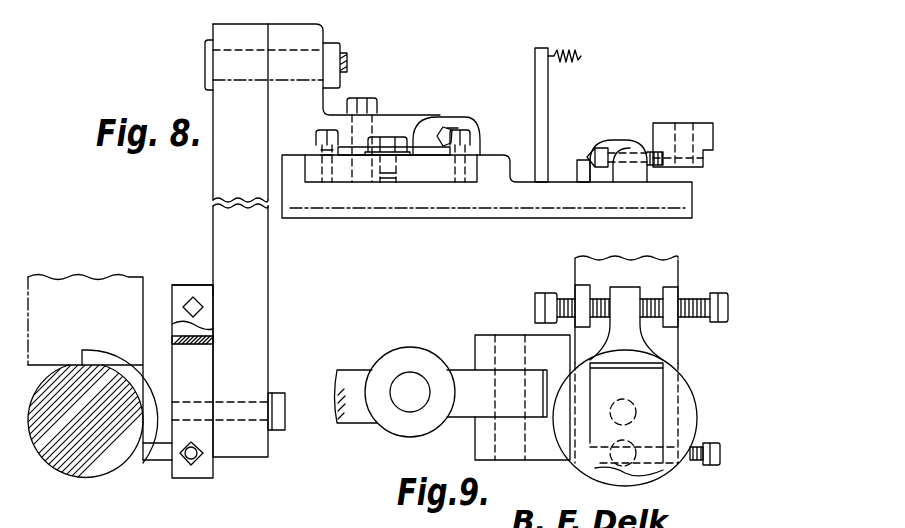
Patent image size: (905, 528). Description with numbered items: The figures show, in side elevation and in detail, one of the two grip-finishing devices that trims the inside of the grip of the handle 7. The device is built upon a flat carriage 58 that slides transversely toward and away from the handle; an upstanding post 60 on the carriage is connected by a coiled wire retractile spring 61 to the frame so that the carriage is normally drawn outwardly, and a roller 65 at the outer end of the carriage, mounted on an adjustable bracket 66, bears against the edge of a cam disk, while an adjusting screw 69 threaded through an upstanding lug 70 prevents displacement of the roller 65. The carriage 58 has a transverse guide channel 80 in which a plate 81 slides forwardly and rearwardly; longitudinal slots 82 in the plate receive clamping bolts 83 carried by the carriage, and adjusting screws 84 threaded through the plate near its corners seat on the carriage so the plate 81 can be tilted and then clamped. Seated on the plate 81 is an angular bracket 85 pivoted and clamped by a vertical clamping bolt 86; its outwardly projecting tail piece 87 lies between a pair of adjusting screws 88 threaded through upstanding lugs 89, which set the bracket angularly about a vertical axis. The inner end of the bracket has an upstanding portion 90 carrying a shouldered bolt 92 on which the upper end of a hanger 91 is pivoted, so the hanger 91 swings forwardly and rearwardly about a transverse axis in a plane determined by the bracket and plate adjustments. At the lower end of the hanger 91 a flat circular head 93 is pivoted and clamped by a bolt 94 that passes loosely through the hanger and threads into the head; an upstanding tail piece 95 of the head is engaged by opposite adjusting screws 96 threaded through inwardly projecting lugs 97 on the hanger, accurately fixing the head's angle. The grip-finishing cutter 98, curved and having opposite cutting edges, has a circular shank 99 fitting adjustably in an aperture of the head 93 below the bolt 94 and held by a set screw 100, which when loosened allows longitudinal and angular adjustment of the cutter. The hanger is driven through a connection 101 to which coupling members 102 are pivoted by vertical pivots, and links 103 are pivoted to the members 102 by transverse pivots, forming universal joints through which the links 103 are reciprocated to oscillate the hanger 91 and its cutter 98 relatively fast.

In FIG. 8, the handle 7 is at (38, 292).
In FIG. 8, the carriage 58 is at (500, 196).
In FIG. 8, the post 60 is at (546, 118).
In FIG. 8, the coiled wire retractile spring 61 is at (580, 46).
In FIG. 8, the roller 65 is at (700, 135).
In FIG. 8, the adjustable bracket 66 is at (665, 165).
In FIG. 8, the adjusting screw 69 is at (600, 152).
In FIG. 8, the lug 70 is at (626, 141).
In FIG. 8, the guide channel 80 is at (477, 172).
In FIG. 8, the plate 81 is at (434, 168).
In FIG. 8, the longitudinal slots 82 is at (377, 167).
In FIG. 8, the clamping bolts 83 is at (390, 162).
In FIG. 8, the adjusting screws 84 is at (318, 135).
In FIG. 8, the angular bracket 85 is at (321, 108).
In FIG. 8, the clamping bolt 86 is at (368, 107).
In FIG. 8, the tail piece 87 is at (467, 127).
In FIG. 8, the adjusting screws 88 is at (440, 128).
In FIG. 8, the lugs 89 is at (478, 128).
In FIG. 8, the upstanding portion 90 is at (304, 37).
In FIG. 8, the hanger 91 is at (232, 167).
In FIG. 9, the hanger 91 is at (661, 282).
In FIG. 8, the shouldered bolt 92 is at (205, 60).
In FIG. 8, the head 93 is at (201, 377).
In FIG. 9, the head 93 is at (682, 410).
In FIG. 8, the bolt 94 is at (283, 431).
In FIG. 9, the bolt 94 is at (612, 428).
In FIG. 8, the tail piece 95 is at (182, 287).
In FIG. 9, the tail piece 95 is at (619, 297).
In FIG. 8, the adjusting screws 96 is at (202, 308).
In FIG. 9, the adjusting screws 96 is at (540, 302).
In FIG. 8, the lugs 97 is at (185, 318).
In FIG. 9, the lugs 97 is at (580, 294).
In FIG. 8, the grip-finishing cutter 98 is at (99, 357).
In FIG. 9, the grip-finishing cutter 98 is at (672, 358).
In FIG. 8, the shank 99 is at (166, 458).
In FIG. 9, the shank 99 is at (635, 478).
In FIG. 8, the set screw 100 is at (194, 458).
In FIG. 9, the set screw 100 is at (690, 463).
In FIG. 9, the hanger connection 101 is at (475, 347).
In FIG. 9, the coupling members 102 is at (473, 402).
In FIG. 9, the links 103 is at (360, 410).